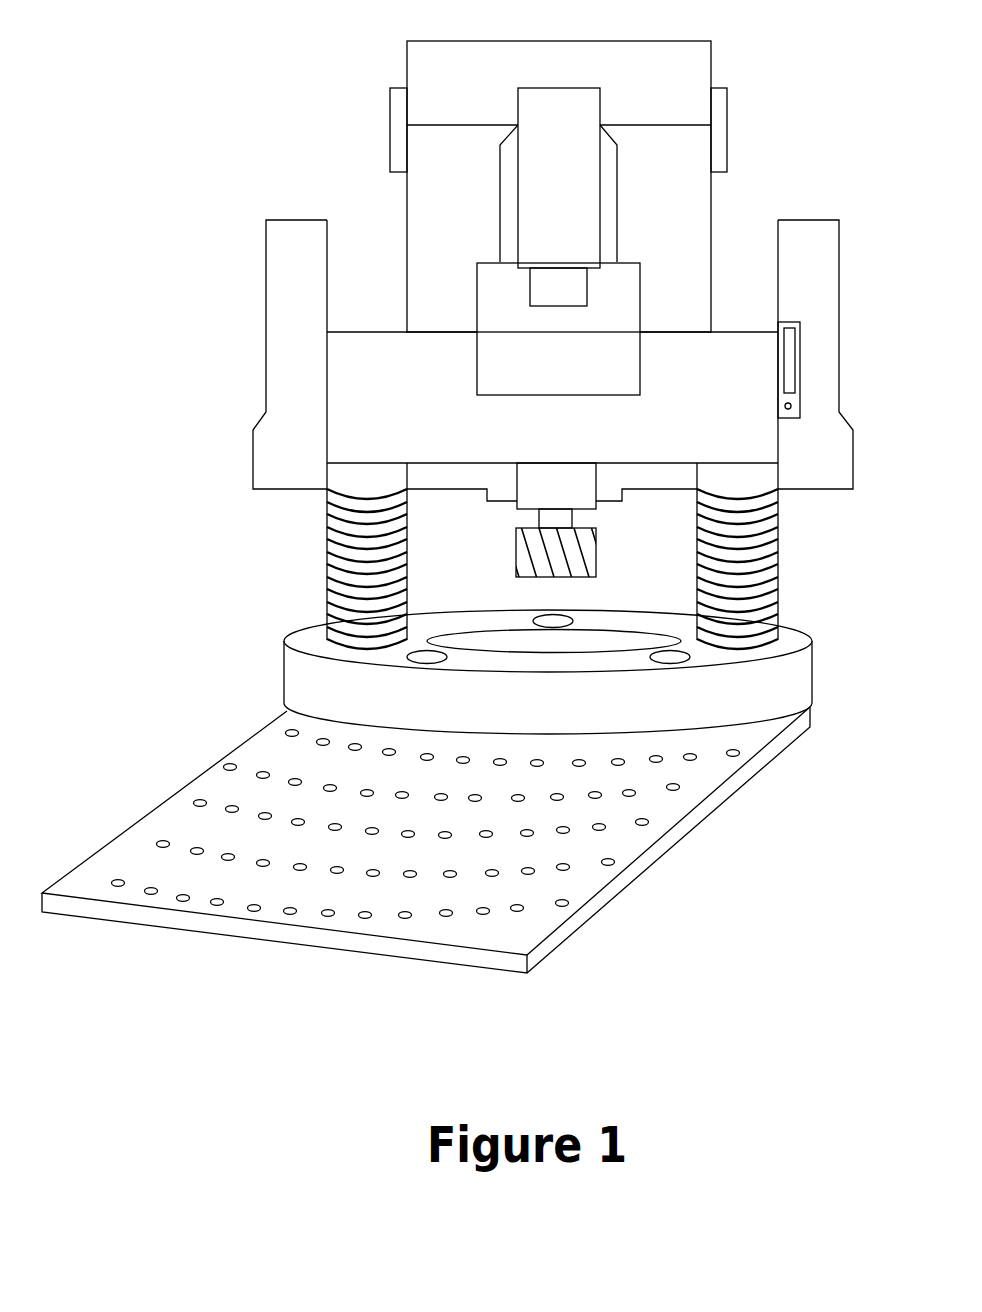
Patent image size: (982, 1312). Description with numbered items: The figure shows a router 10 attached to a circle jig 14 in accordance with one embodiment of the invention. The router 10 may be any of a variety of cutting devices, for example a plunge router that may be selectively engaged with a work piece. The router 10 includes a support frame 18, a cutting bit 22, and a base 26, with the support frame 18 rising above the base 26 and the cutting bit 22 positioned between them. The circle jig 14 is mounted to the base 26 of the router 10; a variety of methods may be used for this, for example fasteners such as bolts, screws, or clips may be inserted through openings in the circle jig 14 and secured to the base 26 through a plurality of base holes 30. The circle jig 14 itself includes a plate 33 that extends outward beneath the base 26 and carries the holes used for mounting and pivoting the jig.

The router 10 is at (462, 486).
The circle jig 14 is at (426, 828).
The support frame 18 is at (779, 604).
The cutting bit 22 is at (517, 558).
The base 26 is at (583, 706).
The base holes 30 is at (673, 665).
The plate 33 is at (577, 882).